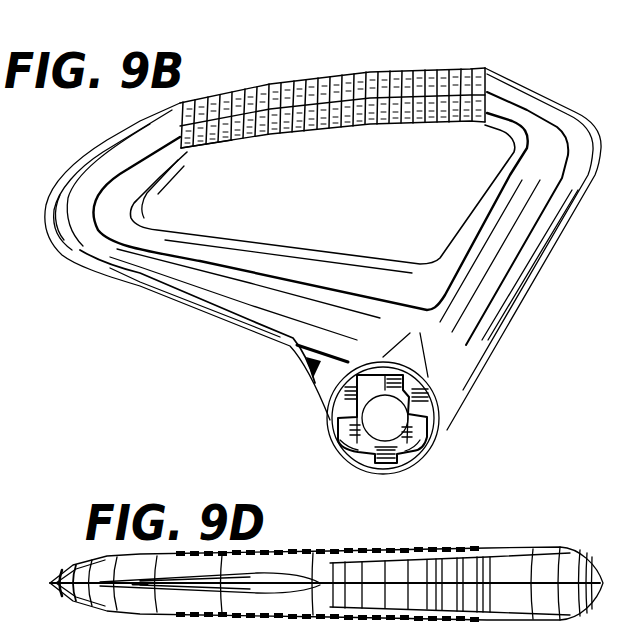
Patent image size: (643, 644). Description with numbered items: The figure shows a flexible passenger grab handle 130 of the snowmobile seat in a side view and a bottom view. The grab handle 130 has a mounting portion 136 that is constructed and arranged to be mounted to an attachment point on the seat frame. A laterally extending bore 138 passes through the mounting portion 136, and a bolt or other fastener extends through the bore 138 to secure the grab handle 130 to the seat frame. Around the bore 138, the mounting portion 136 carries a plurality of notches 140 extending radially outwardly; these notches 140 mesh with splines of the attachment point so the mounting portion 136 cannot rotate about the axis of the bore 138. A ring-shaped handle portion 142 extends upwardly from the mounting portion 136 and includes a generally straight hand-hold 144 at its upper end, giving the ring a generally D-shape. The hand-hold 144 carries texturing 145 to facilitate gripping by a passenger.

The grab handle 130 is at (107, 313).
The mounting portion 136 is at (338, 418).
The bore 138 is at (428, 436).
The notches 140 is at (397, 393).
The handle portion 142 is at (538, 268).
The hand-hold 144 is at (222, 152).
The texturing 145 is at (368, 72).